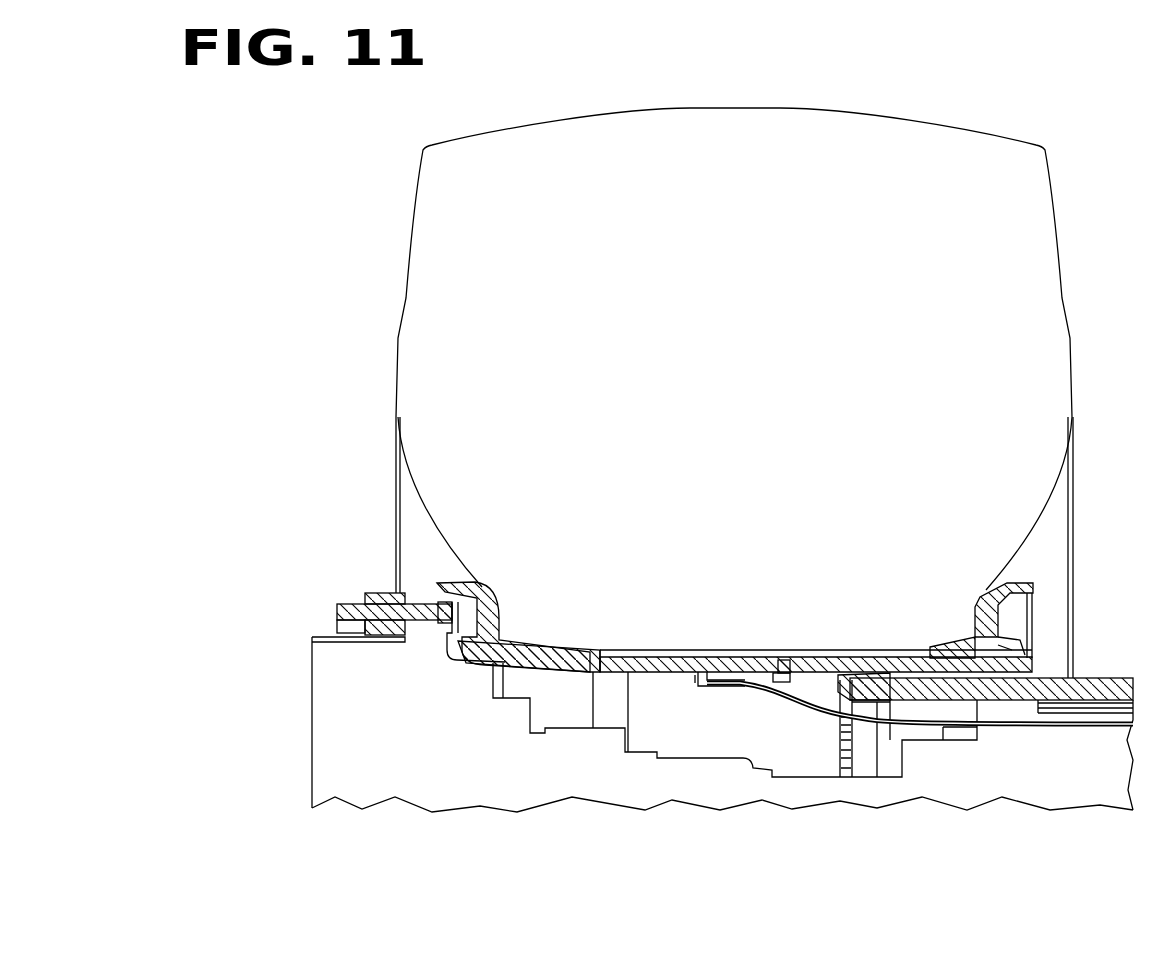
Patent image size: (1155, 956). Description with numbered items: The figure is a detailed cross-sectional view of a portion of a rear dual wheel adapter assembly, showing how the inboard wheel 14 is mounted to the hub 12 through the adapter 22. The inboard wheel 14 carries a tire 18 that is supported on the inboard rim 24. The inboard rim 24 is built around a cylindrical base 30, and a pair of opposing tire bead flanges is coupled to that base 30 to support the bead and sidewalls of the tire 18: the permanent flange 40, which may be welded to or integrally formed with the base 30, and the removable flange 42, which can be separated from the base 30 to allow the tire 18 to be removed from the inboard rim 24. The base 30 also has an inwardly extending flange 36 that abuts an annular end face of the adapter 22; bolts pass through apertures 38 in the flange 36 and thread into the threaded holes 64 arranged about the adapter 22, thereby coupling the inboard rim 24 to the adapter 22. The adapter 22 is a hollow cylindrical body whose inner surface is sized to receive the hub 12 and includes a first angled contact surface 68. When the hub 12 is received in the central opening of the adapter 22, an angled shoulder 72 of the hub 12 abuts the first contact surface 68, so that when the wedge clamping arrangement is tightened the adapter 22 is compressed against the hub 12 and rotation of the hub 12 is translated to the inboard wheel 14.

The hub 12 is at (313, 663).
The inboard wheel 14 is at (410, 163).
The tire 18 is at (600, 128).
The adapter 22 is at (1115, 657).
The inboard rim 24 is at (330, 580).
The cylindrical base 30 is at (740, 660).
The inwardly extending flange 36 is at (840, 675).
The apertures 38 is at (845, 678).
The permanent flange 40 is at (470, 582).
The removable flange 42 is at (1023, 584).
The threaded holes 64 is at (885, 700).
The first angled contact surface 68 is at (985, 712).
The angled shoulder 72 is at (1022, 700).